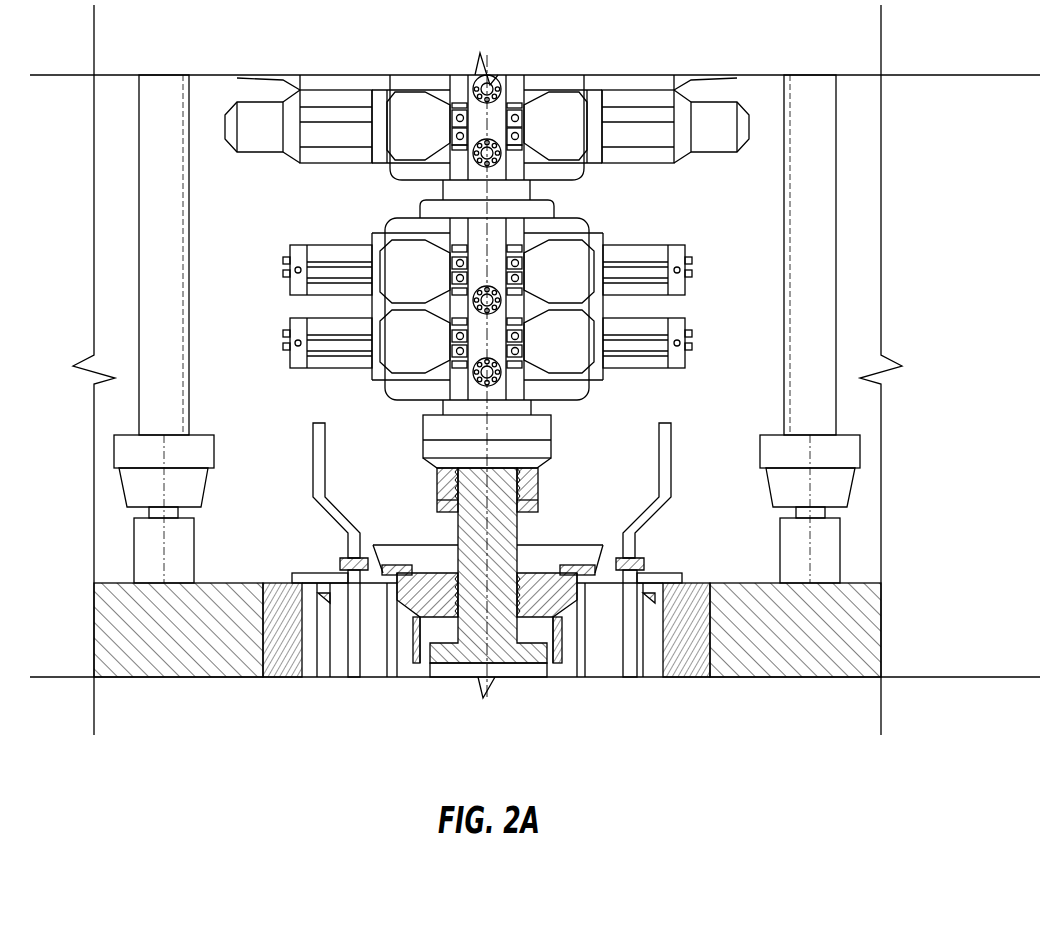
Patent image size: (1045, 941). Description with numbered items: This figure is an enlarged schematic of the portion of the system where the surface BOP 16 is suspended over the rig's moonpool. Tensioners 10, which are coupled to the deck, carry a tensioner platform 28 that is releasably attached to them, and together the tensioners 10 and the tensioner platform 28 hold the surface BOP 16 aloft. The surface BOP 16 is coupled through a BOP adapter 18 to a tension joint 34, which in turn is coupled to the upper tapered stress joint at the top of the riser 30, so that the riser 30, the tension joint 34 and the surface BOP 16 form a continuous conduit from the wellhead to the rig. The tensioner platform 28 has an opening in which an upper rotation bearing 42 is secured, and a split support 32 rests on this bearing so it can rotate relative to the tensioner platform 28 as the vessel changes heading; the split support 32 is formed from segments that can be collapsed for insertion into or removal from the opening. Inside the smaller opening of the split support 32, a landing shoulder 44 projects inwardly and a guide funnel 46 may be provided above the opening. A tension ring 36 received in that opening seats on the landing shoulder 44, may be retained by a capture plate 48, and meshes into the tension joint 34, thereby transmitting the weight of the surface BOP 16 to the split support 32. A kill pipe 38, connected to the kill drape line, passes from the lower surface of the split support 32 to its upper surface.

The tensioners 10 is at (784, 190).
The surface BOP 16 is at (309, 209).
The BOP adapter 18 is at (437, 483).
The tensioner platform 28 is at (131, 583).
The riser 30 is at (489, 685).
The split support 32 is at (372, 602).
The tension joint 34 is at (458, 533).
The tension ring 36 is at (553, 567).
The kill pipe 38 is at (312, 443).
The upper rotation bearing 42 is at (328, 600).
The landing shoulder 44 is at (403, 637).
The guide funnel 46 is at (538, 545).
The capture plate 48 is at (395, 565).